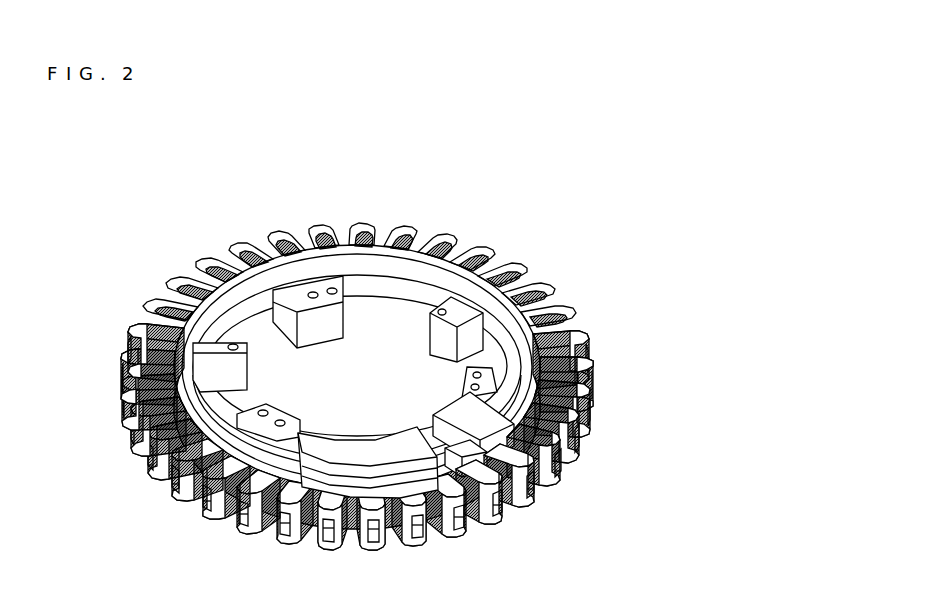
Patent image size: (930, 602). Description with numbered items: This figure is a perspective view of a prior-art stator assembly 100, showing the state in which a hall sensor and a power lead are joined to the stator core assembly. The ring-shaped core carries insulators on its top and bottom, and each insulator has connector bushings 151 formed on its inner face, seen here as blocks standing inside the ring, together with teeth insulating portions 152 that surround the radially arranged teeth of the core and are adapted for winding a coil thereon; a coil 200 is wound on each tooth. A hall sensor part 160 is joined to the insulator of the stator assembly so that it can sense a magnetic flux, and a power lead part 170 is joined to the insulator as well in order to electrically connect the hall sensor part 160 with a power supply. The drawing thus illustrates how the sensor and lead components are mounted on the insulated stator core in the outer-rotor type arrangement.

The motor assembly 100 is at (264, 187).
The connector bushing 151 is at (455, 330).
The teeth insulating portion 152 is at (452, 226).
The hall sensor part 160 is at (347, 434).
The power lead part 170 is at (545, 455).
The coil 200 is at (185, 483).